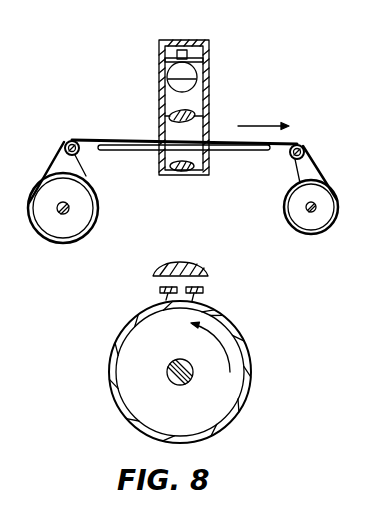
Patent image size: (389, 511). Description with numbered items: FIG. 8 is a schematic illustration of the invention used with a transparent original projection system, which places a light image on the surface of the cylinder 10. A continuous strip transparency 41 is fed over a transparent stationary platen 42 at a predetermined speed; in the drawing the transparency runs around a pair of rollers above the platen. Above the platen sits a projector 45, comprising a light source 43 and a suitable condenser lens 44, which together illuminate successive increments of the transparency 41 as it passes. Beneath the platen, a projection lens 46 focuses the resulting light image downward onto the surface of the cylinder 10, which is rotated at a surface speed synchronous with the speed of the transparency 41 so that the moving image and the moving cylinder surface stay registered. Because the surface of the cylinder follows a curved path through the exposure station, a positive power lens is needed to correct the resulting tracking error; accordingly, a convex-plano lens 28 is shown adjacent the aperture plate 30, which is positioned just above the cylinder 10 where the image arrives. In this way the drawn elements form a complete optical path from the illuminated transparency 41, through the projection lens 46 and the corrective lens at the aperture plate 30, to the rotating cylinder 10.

The cylinder 10 is at (283, 346).
The strip 28 is at (205, 268).
The aperture plate 30 is at (184, 302).
The continuous strip transparency 41 is at (301, 141).
The transparent stationary platen 42 is at (263, 150).
The light source 43 is at (162, 64).
The condenser lens 44 is at (190, 112).
The projector 45 is at (213, 52).
The projection lens 46 is at (179, 172).